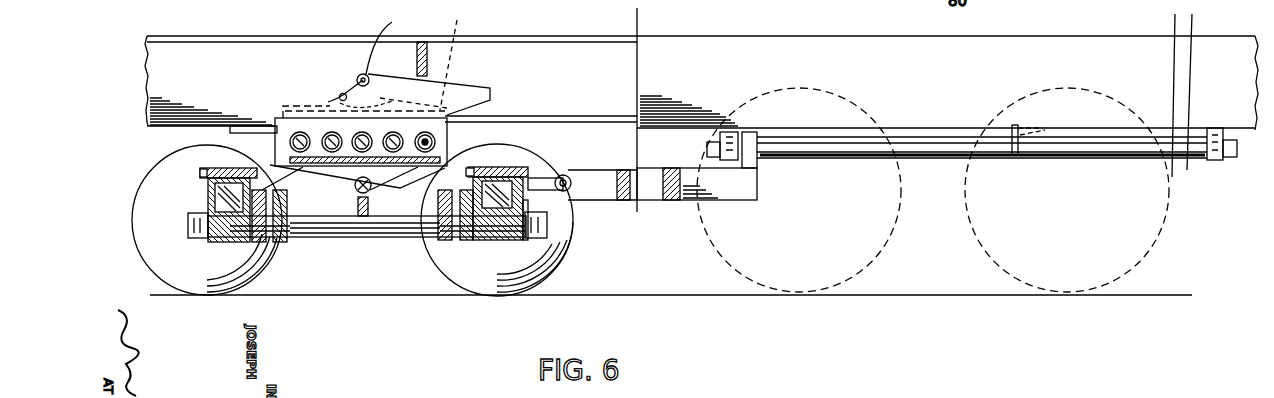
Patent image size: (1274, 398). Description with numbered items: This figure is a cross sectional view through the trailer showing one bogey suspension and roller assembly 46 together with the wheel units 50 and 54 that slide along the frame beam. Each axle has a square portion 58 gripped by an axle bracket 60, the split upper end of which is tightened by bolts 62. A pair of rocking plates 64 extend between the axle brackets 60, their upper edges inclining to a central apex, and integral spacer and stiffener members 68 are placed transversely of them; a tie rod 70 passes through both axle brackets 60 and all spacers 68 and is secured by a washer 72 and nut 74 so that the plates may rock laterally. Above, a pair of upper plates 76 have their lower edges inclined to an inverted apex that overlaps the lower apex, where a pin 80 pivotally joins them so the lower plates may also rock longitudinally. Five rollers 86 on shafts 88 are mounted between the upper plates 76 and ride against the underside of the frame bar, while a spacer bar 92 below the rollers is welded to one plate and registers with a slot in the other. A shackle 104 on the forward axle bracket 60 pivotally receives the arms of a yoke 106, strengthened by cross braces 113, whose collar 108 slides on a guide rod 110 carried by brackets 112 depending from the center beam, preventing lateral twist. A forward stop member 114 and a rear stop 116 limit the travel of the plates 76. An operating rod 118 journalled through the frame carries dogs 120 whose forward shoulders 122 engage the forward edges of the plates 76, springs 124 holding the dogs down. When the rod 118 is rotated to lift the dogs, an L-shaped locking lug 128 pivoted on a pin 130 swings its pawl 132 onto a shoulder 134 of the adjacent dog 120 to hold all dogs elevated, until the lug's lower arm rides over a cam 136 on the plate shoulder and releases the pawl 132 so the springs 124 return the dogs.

The bogey suspension and roller assembly 46 is at (470, 143).
The wheel unit 50 is at (566, 282).
The wheel unit 54 is at (162, 291).
The square portion of axle 58 is at (232, 214).
The axle bracket 60 is at (215, 200).
The bolt 62 is at (206, 172).
The rocking plate 64 is at (320, 240).
The spacer and stiffener member 68 is at (440, 242).
The tie rod 70 is at (405, 226).
The washer 72 is at (210, 234).
The nut 74 is at (196, 226).
The upper plate 76 is at (283, 130).
The pin 80 is at (354, 188).
The roller 86 is at (432, 136).
The shaft 88 is at (440, 136).
The spacer bar 92 is at (353, 184).
The shackle 104 is at (571, 180).
The yoke 106 is at (731, 200).
The collar 108 is at (756, 163).
The guide rod 110 is at (925, 160).
The bracket 112 is at (740, 136).
The cross brace 113 is at (672, 172).
The forward stop member 114 is at (1052, 128).
The rear stop 116 is at (245, 133).
The operating rod 118 is at (386, 38).
The dog 120 is at (470, 35).
The forward shoulder 122 is at (480, 95).
The spring 124 is at (430, 40).
The locking lug 128 is at (338, 94).
The pin 130 is at (335, 98).
The pawl 132 is at (340, 93).
The shoulder 134 is at (357, 76).
The cam 136 is at (322, 110).